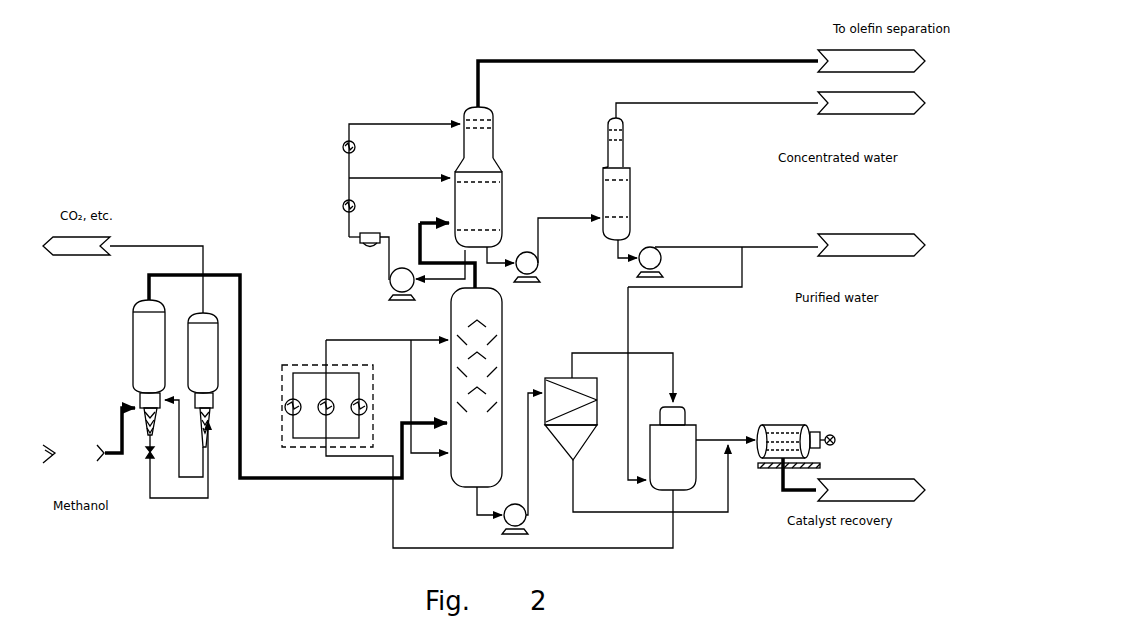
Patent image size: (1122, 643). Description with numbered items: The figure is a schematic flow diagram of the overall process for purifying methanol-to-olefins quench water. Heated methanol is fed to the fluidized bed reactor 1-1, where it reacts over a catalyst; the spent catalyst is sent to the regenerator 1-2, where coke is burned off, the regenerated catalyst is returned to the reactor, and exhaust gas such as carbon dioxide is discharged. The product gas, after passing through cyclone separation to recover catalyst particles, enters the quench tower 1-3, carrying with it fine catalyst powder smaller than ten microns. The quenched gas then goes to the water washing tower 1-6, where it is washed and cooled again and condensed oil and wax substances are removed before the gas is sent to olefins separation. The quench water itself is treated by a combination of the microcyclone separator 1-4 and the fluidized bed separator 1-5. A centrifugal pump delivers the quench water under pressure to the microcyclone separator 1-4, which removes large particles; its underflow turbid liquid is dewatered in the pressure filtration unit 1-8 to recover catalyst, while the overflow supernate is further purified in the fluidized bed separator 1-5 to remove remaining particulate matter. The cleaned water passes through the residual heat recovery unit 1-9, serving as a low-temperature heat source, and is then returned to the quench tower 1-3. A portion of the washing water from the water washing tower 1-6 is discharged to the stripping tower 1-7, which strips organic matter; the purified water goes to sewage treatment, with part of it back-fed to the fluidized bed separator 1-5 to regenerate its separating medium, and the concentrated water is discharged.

The fluidized bed reactor 1-1 is at (158, 399).
The regenerator 1-2 is at (198, 388).
The quench tower 1-3 is at (485, 411).
The microcyclone separator 1-4 is at (633, 432).
The fluidized bed separator 1-5 is at (691, 388).
The water washing tower 1-6 is at (471, 203).
The stripping tower 1-7 is at (710, 195).
The pressure filtration unit 1-8 is at (801, 454).
The residual heat recovery unit 1-9 is at (327, 397).